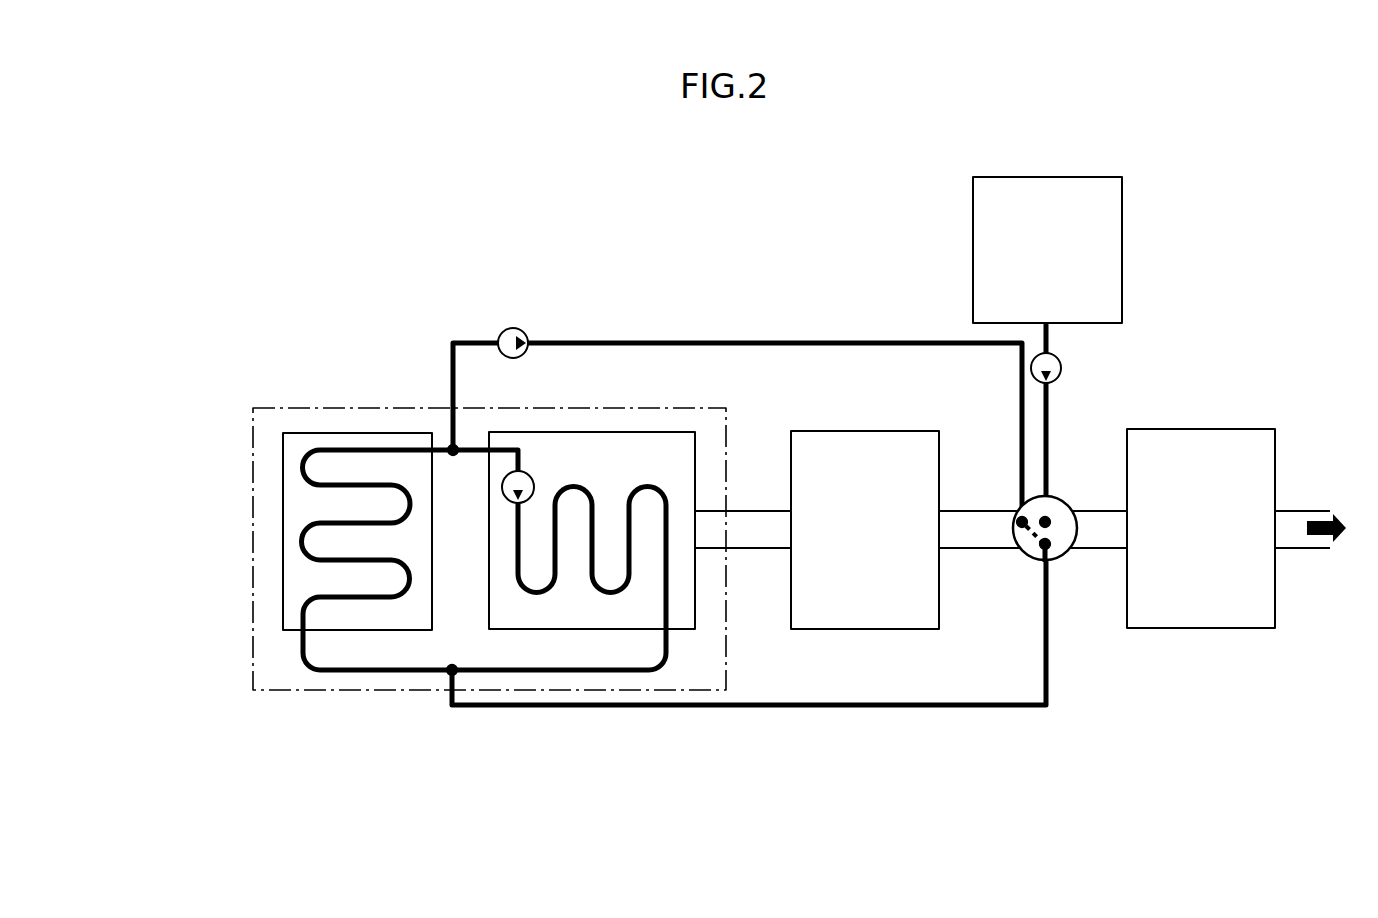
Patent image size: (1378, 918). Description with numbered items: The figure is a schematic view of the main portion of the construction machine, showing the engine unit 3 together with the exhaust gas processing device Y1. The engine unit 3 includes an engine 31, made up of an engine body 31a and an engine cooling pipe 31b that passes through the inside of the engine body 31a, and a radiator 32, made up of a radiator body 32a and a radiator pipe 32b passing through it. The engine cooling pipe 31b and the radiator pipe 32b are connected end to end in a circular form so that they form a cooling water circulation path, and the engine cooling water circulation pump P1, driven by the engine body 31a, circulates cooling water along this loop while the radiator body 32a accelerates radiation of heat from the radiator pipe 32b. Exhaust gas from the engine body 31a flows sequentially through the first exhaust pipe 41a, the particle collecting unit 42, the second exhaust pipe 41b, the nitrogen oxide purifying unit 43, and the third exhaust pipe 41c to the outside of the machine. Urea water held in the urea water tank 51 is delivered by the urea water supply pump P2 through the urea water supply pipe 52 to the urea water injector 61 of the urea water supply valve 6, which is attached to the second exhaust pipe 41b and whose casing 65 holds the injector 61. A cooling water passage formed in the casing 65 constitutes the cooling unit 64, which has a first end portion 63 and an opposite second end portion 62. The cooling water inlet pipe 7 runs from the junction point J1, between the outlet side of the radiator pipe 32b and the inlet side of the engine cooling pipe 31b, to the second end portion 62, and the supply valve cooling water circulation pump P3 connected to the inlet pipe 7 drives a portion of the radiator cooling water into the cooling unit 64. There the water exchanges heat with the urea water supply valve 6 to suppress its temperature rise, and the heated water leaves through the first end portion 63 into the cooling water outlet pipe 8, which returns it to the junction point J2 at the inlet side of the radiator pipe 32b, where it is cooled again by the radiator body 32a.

The engine unit 3 is at (283, 694).
The urea water supply valve 6 is at (1047, 550).
The cooling water inlet pipe 7 is at (750, 341).
The cooling water outlet pipe 8 is at (775, 708).
The engine 31 is at (582, 465).
The engine body 31a is at (675, 432).
The engine cooling pipe 31b is at (626, 486).
The radiator 32 is at (294, 551).
The radiator body 32a is at (283, 455).
The radiator pipe 32b is at (305, 480).
The first exhaust pipe 41a is at (755, 552).
The second exhaust pipe 41b is at (963, 552).
The third exhaust pipe 41c is at (1308, 550).
The particle collecting unit 42 is at (855, 631).
The nitrogen oxide purifying unit 43 is at (1197, 629).
The urea water tank 51 is at (1037, 176).
The urea water supply pipe 52 is at (1050, 422).
The urea water injector 61 is at (1052, 503).
The second end portion 62 is at (1017, 513).
The first end portion 63 is at (1052, 556).
The cooling unit 64 is at (1024, 546).
The casing 65 is at (1056, 550).
The junction point J1 is at (447, 444).
The junction point J2 is at (448, 676).
The engine cooling water circulation pump P1 is at (534, 492).
The urea water supply pump P2 is at (1062, 363).
The supply valve cooling water circulation pump P3 is at (510, 328).
The exhaust gas processing device Y1 is at (1102, 318).